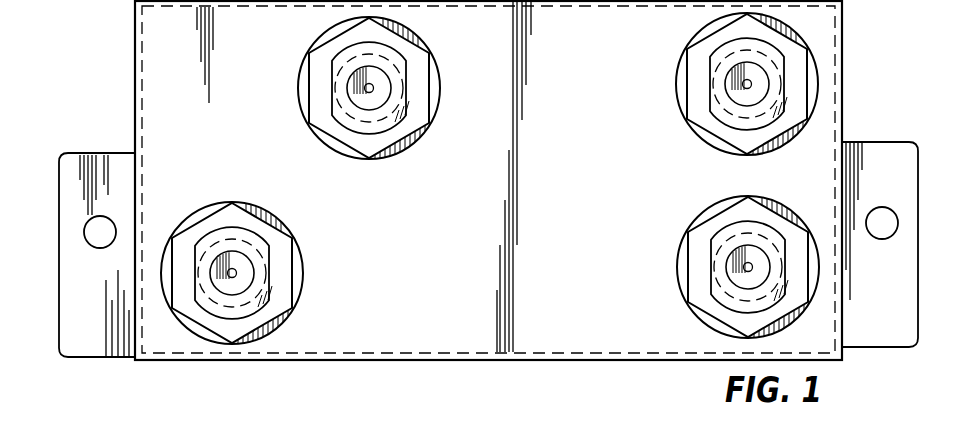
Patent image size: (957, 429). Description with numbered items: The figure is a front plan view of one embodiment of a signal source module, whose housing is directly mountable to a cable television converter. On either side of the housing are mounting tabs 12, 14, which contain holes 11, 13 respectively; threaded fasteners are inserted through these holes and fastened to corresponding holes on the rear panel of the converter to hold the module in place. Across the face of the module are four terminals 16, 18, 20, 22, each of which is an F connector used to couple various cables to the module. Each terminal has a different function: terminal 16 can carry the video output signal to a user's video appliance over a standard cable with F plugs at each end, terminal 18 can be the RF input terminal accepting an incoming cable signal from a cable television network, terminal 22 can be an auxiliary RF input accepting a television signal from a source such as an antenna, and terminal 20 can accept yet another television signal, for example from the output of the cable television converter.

The hole 11 is at (91, 240).
The mounting tab 12 is at (86, 319).
The hole 13 is at (884, 210).
The mounting tab 14 is at (890, 307).
The terminal 16 is at (406, 101).
The terminal 18 is at (710, 78).
The terminal 20 is at (265, 286).
The terminal 22 is at (710, 263).